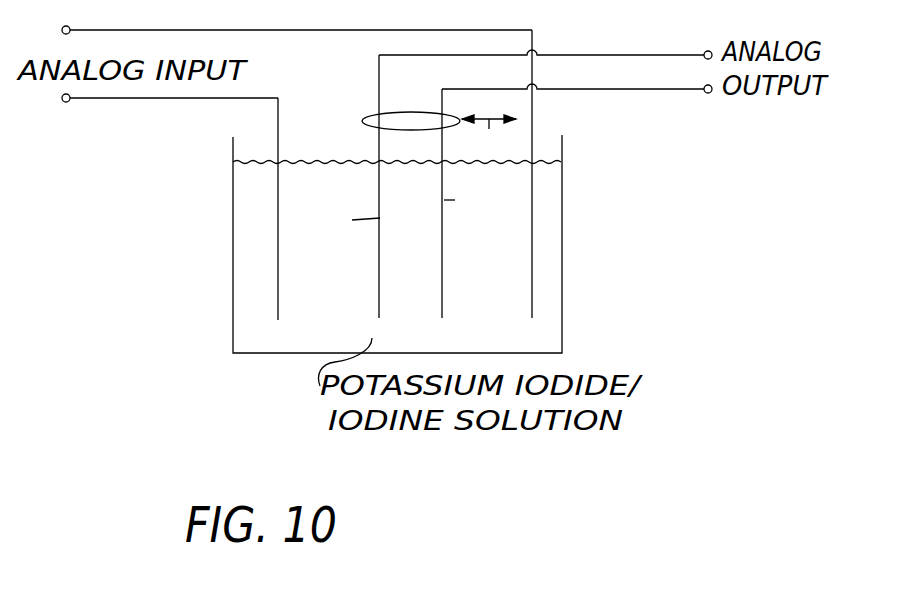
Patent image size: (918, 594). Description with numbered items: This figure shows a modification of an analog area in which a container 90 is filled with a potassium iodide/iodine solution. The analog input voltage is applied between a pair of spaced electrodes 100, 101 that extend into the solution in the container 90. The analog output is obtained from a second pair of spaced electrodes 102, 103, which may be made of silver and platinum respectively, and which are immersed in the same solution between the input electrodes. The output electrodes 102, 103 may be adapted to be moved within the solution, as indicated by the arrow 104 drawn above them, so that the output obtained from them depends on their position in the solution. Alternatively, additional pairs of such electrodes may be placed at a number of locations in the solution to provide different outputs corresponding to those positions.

The container 90 is at (565, 207).
The spaced electrode 100 is at (280, 300).
The spaced electrode 101 is at (530, 268).
The silver electrode 102 is at (380, 283).
The platinum electrode 103 is at (445, 296).
The arrow 104 is at (439, 135).